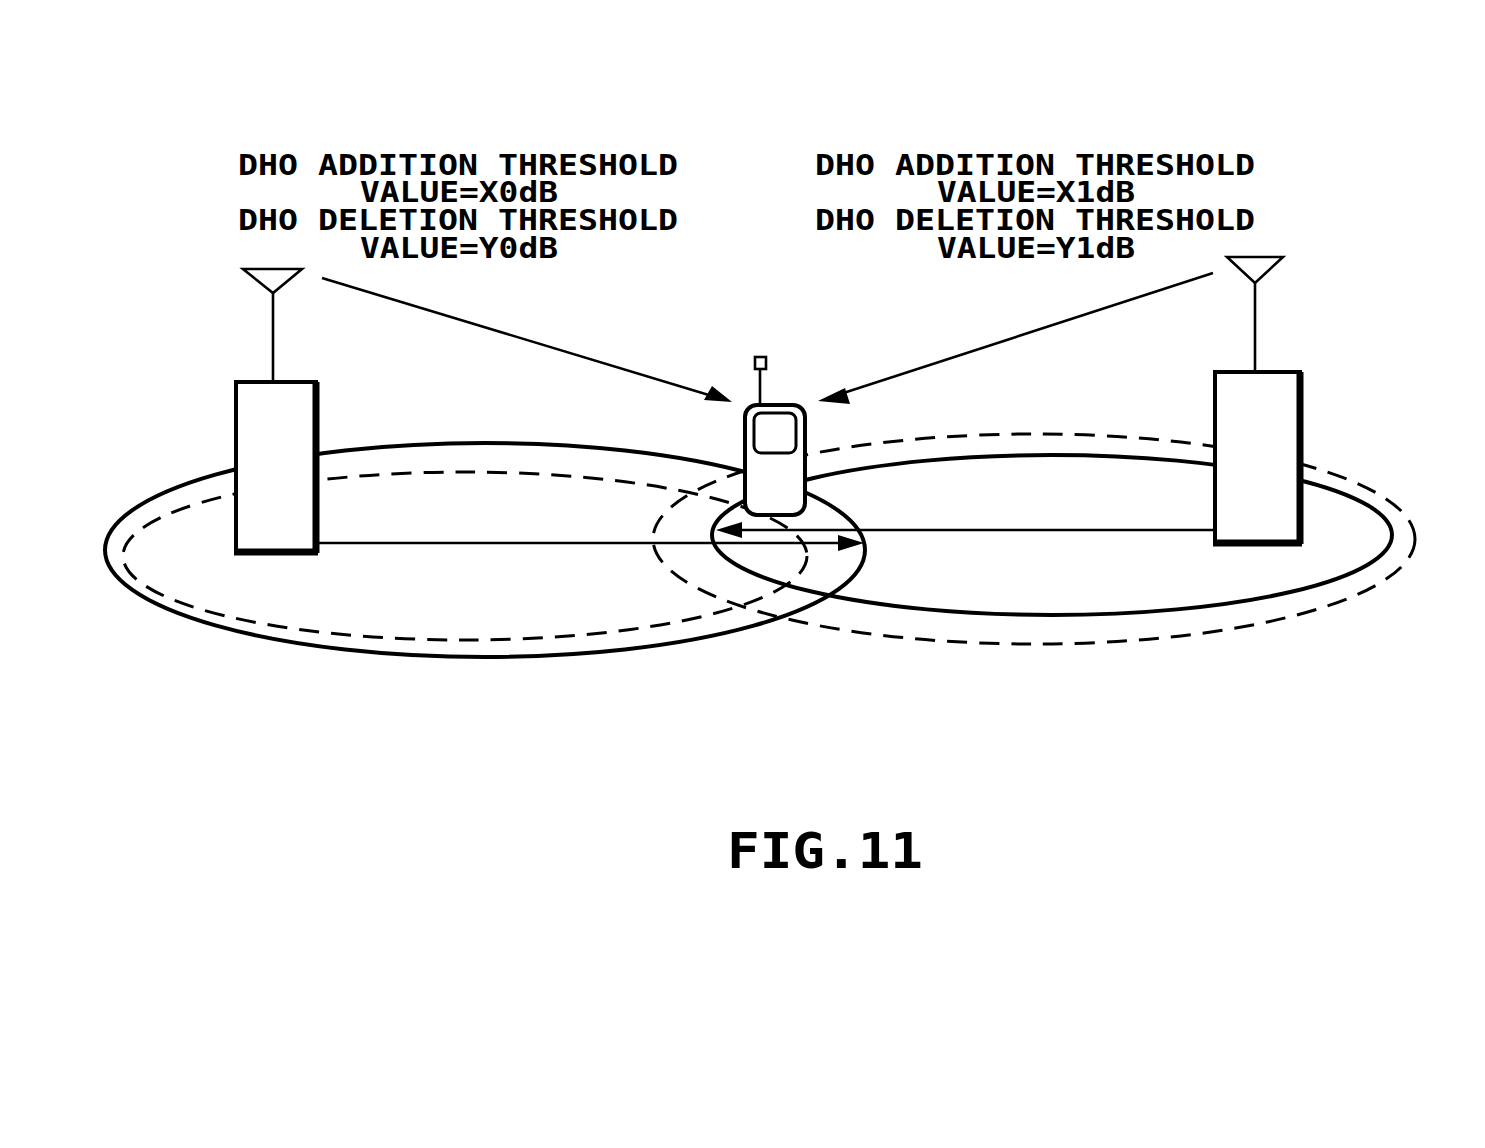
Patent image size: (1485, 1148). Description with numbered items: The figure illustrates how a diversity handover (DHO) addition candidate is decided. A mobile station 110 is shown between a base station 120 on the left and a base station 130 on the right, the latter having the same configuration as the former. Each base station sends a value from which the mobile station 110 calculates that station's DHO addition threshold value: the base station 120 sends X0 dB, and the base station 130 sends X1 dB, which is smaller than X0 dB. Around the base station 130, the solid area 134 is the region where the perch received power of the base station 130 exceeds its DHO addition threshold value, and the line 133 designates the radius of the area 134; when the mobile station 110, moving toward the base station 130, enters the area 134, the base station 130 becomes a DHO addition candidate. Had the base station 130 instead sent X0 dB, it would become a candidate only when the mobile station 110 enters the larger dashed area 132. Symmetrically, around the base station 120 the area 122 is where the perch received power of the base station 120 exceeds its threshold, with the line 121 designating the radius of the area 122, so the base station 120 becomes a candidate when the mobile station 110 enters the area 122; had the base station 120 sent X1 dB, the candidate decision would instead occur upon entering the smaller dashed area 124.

The mobile station 110 is at (778, 404).
The base station 120 is at (290, 553).
The radius of the area 122 121 is at (560, 542).
The area 122 is at (513, 447).
The area 124 is at (632, 628).
The base station 130 is at (1245, 545).
The area 132 is at (1064, 430).
The radius of the area 134 133 is at (1063, 530).
The area 134 is at (1058, 618).